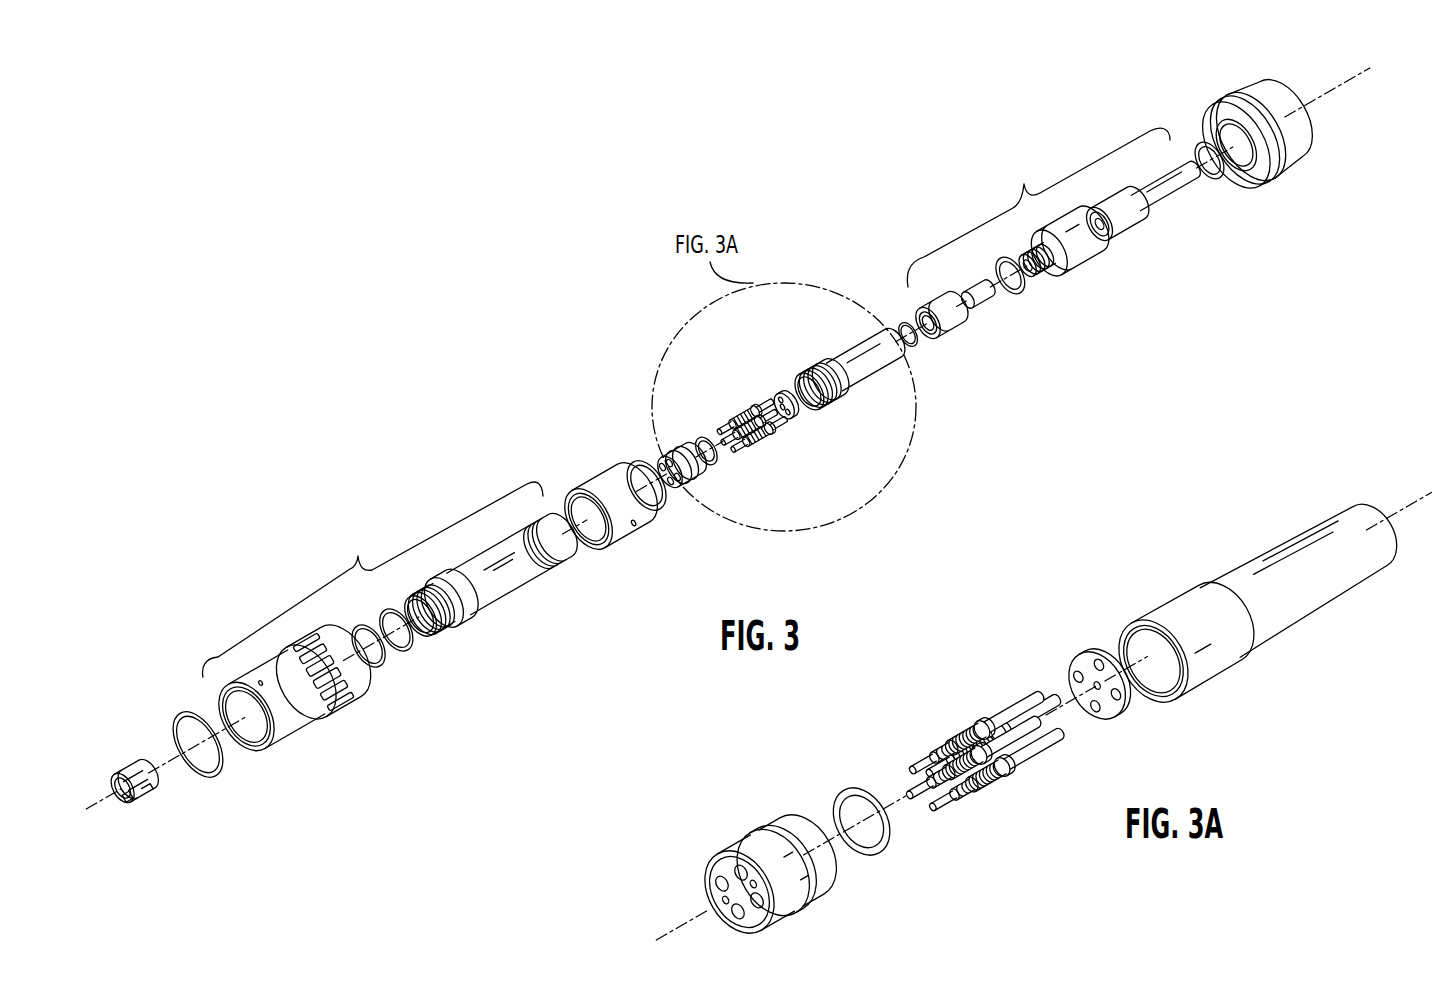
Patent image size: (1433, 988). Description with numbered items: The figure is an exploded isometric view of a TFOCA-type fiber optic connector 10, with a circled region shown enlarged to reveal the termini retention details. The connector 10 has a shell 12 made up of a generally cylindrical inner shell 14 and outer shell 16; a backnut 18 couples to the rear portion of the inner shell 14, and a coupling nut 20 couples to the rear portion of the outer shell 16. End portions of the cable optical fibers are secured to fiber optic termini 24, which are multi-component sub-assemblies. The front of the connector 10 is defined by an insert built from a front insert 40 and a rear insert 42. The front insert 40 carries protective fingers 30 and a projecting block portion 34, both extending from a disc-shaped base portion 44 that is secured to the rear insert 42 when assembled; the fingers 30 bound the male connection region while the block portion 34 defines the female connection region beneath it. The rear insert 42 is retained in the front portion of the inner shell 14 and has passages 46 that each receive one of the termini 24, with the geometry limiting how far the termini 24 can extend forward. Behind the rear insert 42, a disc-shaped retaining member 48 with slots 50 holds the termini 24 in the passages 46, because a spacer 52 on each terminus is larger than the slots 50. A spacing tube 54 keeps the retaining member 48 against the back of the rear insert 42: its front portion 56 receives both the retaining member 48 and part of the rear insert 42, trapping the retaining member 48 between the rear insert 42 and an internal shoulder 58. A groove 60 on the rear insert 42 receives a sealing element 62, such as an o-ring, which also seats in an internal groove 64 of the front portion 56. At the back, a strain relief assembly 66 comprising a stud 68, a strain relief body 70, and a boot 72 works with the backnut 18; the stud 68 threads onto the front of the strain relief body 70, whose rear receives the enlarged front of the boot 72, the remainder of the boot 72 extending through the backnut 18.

In FIG. 3, the fiber optic connector 10 is at (542, 413).
In FIG. 3, the shell 12 is at (373, 579).
In FIG. 3, the inner shell 14 is at (503, 603).
In FIG. 3, the outer shell 16 is at (303, 730).
In FIG. 3, the backnut 18 is at (1263, 95).
In FIG. 3, the coupling nut 20 is at (623, 547).
In FIG. 3A, the fiber optic termini 24 is at (968, 722).
In FIG. 3, the protective fingers 30 is at (118, 768).
In FIG. 3, the projecting block portion 34 is at (130, 805).
In FIG. 3, the front insert 40 is at (130, 758).
In FIG. 3, the base portion 44 is at (157, 793).
In FIG. 3A, the rear insert 42 is at (750, 833).
In FIG. 3A, the passages 46 is at (715, 860).
In FIG. 3A, the retaining member 48 is at (1098, 652).
In FIG. 3A, the slots 50 is at (1085, 653).
In FIG. 3A, the spacer 52 is at (993, 710).
In FIG. 3A, the spacing tube 54 is at (1288, 627).
In FIG. 3A, the front portion 56 is at (1203, 680).
In FIG. 3A, the internal shoulder 58 is at (1170, 687).
In FIG. 3A, the groove 60 is at (787, 835).
In FIG. 3A, the sealing element 62 is at (873, 853).
In FIG. 3A, the internal groove 64 is at (1138, 633).
In FIG. 3, the strain relief assembly 66 is at (1038, 207).
In FIG. 3, the stud 68 is at (950, 327).
In FIG. 3, the strain relief body 70 is at (1080, 267).
In FIG. 3, the boot 72 is at (1165, 200).